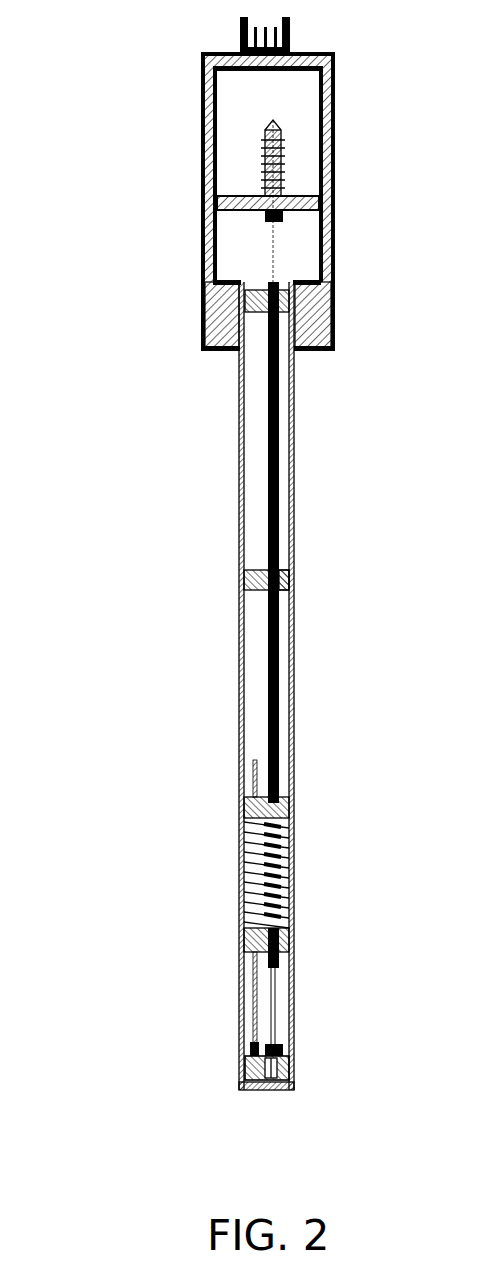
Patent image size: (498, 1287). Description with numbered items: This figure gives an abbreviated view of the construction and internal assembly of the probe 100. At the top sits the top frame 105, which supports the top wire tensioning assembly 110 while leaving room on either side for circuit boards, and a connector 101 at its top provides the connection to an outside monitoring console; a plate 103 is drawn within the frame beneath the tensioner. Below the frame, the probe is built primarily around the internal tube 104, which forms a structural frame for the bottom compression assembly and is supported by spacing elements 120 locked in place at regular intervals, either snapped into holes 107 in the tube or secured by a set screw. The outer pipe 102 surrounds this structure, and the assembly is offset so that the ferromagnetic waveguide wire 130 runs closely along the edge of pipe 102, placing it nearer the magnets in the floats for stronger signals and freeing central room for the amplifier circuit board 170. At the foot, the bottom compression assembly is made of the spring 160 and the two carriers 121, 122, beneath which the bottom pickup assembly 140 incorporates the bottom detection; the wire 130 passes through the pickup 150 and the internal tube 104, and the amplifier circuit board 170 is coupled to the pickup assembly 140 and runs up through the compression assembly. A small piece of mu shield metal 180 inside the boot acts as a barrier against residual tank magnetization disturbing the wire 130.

The probe 100 is at (124, 342).
The connector 101 is at (290, 28).
The pipe 102 is at (239, 450).
The plate 103 is at (335, 197).
The internal tube 104 is at (282, 398).
The top frame 105 is at (335, 68).
The holes 107 is at (282, 584).
The top wire tensioning assembly 110 is at (262, 168).
The spacing element 120 is at (268, 577).
The carrier 121 is at (248, 806).
The carrier 122 is at (245, 940).
The wire 130 is at (274, 1002).
The bottom pickup assembly 140 is at (240, 1076).
The pickup 150 is at (290, 1052).
The spring 160 is at (290, 873).
The amplifier circuit board 170 is at (253, 985).
The mu shield metal 180 is at (285, 1087).